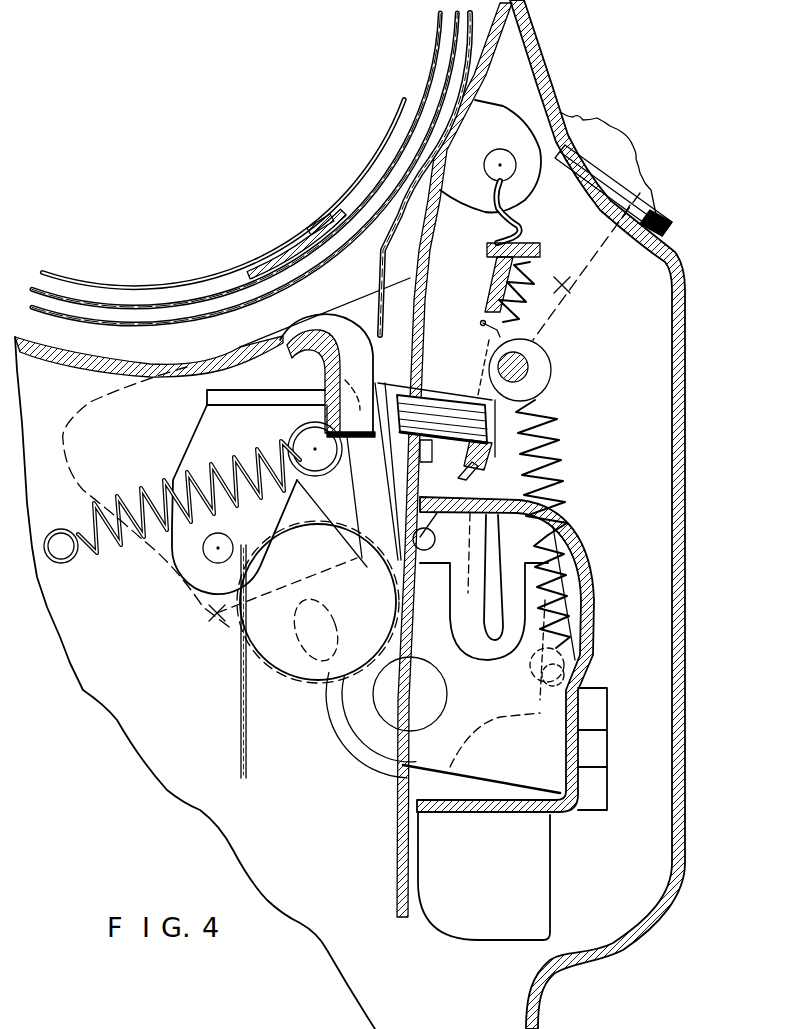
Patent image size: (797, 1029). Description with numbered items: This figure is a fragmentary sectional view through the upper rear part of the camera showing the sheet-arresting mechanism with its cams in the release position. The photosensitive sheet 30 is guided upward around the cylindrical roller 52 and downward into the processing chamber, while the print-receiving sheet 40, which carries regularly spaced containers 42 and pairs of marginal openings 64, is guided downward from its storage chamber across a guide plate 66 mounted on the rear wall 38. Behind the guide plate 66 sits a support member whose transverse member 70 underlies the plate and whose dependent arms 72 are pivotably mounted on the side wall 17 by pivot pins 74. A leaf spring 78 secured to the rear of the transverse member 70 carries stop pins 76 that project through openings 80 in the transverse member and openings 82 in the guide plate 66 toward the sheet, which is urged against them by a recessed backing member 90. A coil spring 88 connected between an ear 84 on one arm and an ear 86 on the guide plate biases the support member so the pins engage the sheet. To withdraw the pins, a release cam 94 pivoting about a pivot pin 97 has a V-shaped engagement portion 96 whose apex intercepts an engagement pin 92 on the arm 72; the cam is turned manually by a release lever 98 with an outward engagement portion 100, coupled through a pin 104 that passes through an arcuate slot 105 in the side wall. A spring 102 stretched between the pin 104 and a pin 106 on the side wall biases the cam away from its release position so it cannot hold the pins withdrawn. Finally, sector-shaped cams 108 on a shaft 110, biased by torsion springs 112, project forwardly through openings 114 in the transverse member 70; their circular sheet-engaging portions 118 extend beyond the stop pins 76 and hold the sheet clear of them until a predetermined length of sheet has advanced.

The side wall 17 is at (116, 651).
The photosensitive sheet 30 is at (250, 757).
The rear wall 38 is at (677, 473).
The print-receiving sheet 40 is at (230, 317).
The containers 42 is at (300, 237).
The cylindrical roller 52 is at (350, 710).
The openings 64 is at (402, 399).
The guide plate 66 is at (440, 486).
The transverse member 70 is at (490, 310).
The dependent arms 72 is at (498, 563).
The pivot pins 74 is at (428, 708).
The stop pins 76 is at (423, 443).
The leaf spring 78 is at (540, 463).
The openings 80 is at (490, 453).
The openings 82 is at (464, 470).
The ear 84 is at (543, 672).
The ear 86 is at (513, 140).
The coil spring 88 is at (557, 487).
The backing member 90 is at (353, 341).
The engagement pin 92 is at (480, 586).
The release cam 94 is at (215, 436).
The engagement portion 96 is at (323, 372).
The pivot pin 97 is at (212, 551).
The release lever 98 is at (214, 619).
The engagement portion 100 is at (623, 148).
The spring 102 is at (147, 487).
The pin 104 is at (310, 433).
The arcuate slot 105 is at (310, 610).
The pin 106 is at (61, 552).
The sector-shaped cams 108 is at (438, 240).
The shaft 110 is at (497, 353).
The torsion springs 112 is at (480, 380).
The openings 114 is at (480, 323).
The sheet-engaging portion 118 is at (392, 220).